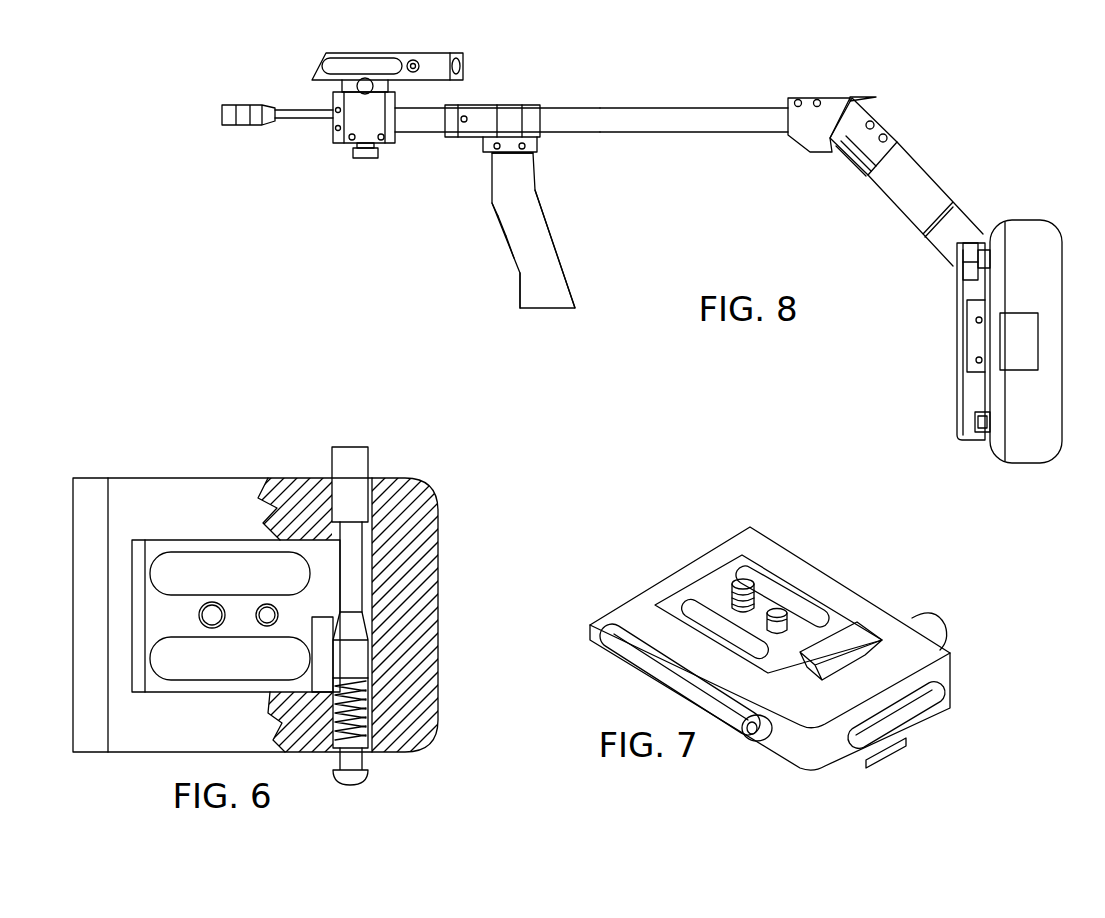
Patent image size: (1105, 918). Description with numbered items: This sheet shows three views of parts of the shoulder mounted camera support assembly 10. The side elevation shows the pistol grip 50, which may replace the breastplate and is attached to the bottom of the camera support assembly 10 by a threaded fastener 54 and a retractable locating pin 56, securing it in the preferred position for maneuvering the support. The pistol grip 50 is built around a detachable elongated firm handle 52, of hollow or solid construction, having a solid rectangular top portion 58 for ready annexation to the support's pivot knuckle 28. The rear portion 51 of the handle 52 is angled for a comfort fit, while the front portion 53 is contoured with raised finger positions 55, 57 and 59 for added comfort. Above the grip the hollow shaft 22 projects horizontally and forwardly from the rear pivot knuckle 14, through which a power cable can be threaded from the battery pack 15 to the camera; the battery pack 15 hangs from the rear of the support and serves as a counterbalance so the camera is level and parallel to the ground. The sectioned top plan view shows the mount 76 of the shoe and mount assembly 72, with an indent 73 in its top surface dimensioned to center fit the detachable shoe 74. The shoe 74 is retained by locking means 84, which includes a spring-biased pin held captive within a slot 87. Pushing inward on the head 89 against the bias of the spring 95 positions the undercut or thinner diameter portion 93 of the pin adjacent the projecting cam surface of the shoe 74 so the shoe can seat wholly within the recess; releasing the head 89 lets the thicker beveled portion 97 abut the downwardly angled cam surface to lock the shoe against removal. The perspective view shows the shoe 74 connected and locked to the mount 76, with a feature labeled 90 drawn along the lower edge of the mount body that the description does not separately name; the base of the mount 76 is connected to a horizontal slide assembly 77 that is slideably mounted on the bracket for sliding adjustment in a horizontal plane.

In FIG. 8, the shoulder mounted camera support assembly 10 is at (792, 72).
In FIG. 8, the rear pivot knuckle 14 is at (862, 118).
In FIG. 8, the battery pack 15 is at (1023, 240).
In FIG. 8, the hollow shaft 22 is at (622, 106).
In FIG. 8, the pivot knuckle 28 is at (470, 140).
In FIG. 8, the pistol grip 50 is at (566, 320).
In FIG. 8, the rear portion 51 is at (549, 216).
In FIG. 8, the elongated firm handle 52 is at (517, 174).
In FIG. 8, the front portion 53 is at (518, 281).
In FIG. 8, the threaded fastener 54 is at (497, 143).
In FIG. 8, the raised finger position 55 is at (498, 222).
In FIG. 8, the retractable locating pin 56 is at (524, 143).
In FIG. 8, the raised finger position 57 is at (506, 240).
In FIG. 8, the solid rectangular top portion 58 is at (696, 106).
In FIG. 8, the raised finger position 59 is at (514, 262).
In FIG. 7, the shoe and mount assembly 72 is at (840, 535).
In FIG. 6, the indent 73 is at (323, 620).
In FIG. 7, the shoe 74 is at (757, 570).
In FIG. 6, the mount 76 is at (130, 745).
In FIG. 7, the mount 76 is at (778, 744).
In FIG. 7, the horizontal slide assembly 77 is at (905, 750).
In FIG. 6, the locking means 84 is at (362, 608).
In FIG. 7, the locking means 84 is at (947, 609).
In FIG. 6, the slot 87 is at (372, 562).
In FIG. 6, the head 89 is at (356, 450).
In FIG. 7, the dovetail slot 90 is at (833, 775).
In FIG. 6, the undercut or thinner diameter portion 93 is at (357, 537).
In FIG. 6, the spring 95 is at (375, 703).
In FIG. 6, the thicker beveled portion 97 is at (365, 652).